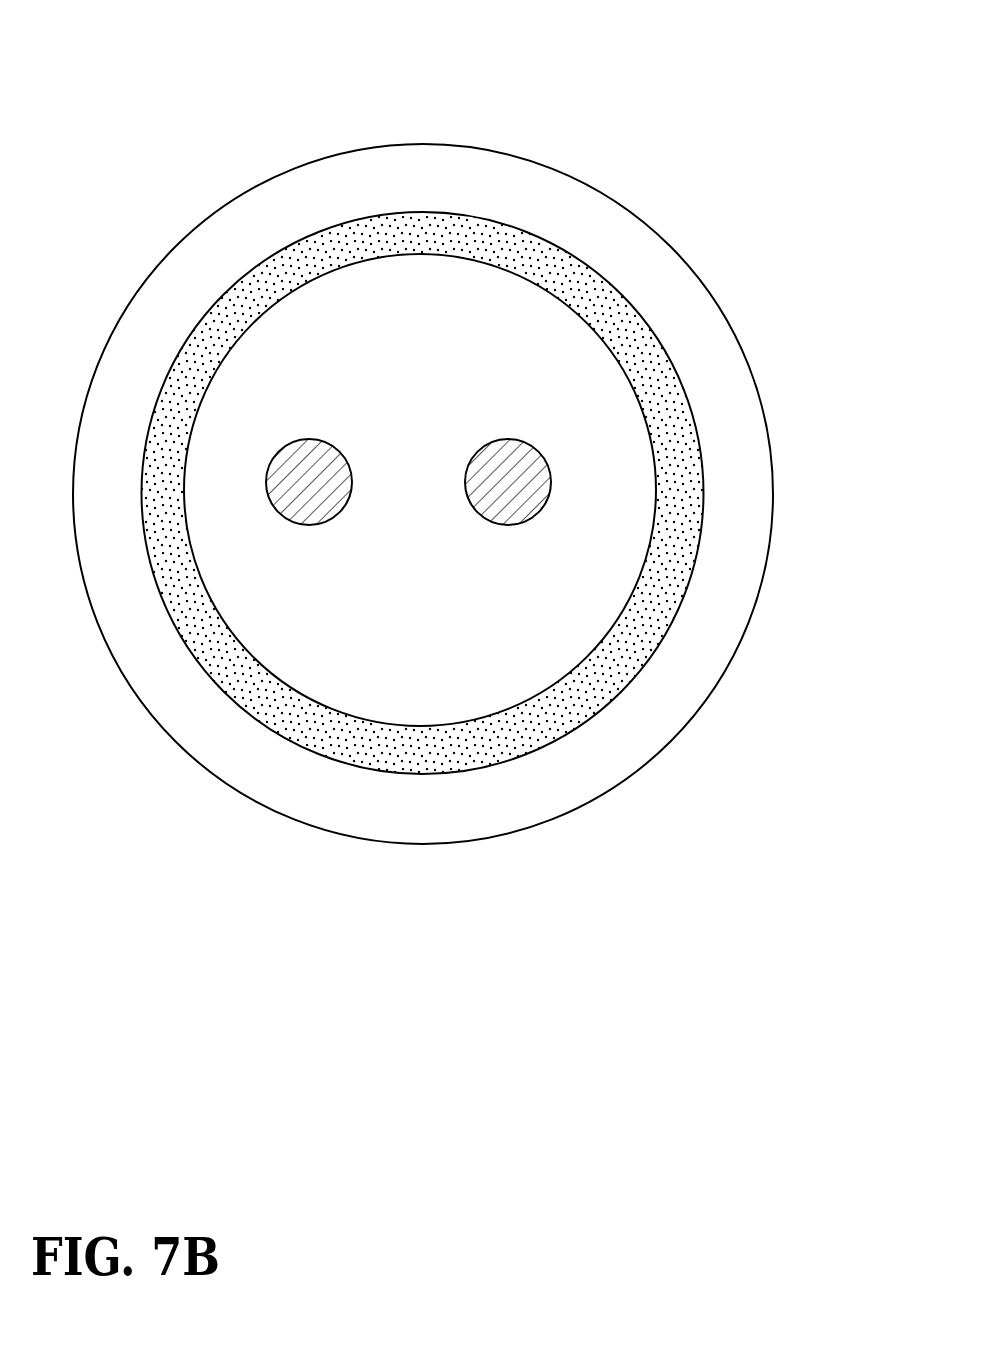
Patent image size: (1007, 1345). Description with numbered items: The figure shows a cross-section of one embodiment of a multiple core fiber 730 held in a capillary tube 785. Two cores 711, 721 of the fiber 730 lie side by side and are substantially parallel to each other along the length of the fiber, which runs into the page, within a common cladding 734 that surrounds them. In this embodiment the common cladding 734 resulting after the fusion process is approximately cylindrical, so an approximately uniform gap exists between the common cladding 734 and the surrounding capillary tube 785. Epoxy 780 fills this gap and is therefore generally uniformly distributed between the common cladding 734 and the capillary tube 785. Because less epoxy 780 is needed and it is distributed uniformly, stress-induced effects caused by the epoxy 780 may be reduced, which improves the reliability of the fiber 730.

The fiber 730 is at (702, 98).
The capillary tube 785 is at (439, 822).
The epoxy 780 is at (698, 458).
The common cladding 734 is at (439, 640).
The core 711 is at (308, 438).
The core 721 is at (508, 438).